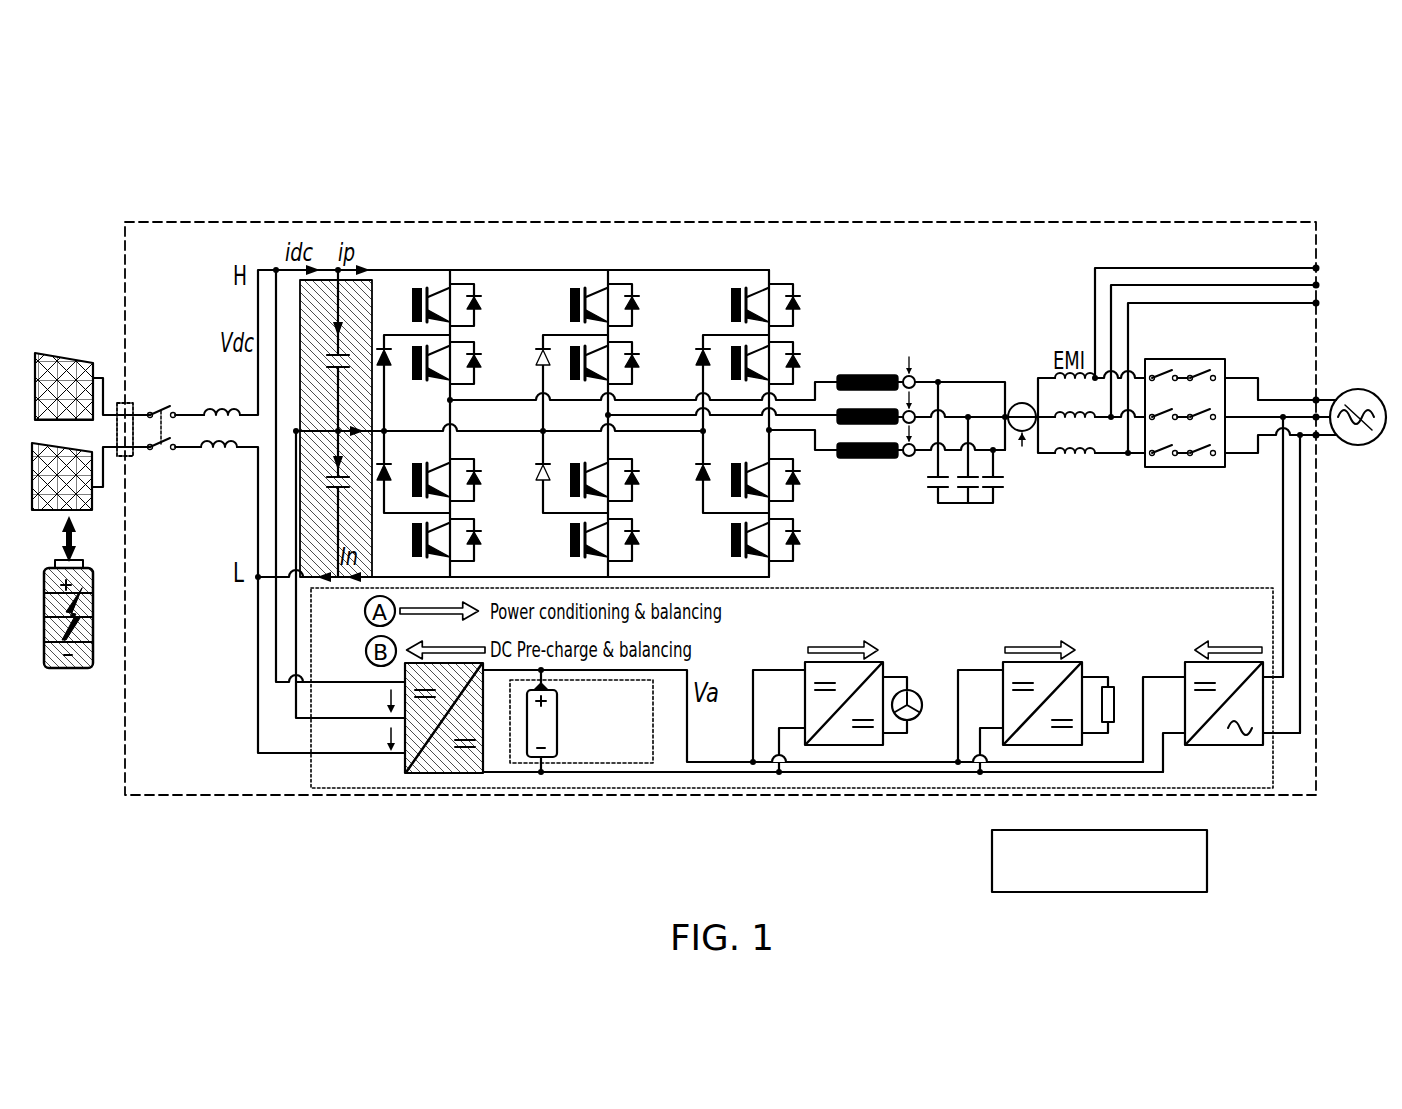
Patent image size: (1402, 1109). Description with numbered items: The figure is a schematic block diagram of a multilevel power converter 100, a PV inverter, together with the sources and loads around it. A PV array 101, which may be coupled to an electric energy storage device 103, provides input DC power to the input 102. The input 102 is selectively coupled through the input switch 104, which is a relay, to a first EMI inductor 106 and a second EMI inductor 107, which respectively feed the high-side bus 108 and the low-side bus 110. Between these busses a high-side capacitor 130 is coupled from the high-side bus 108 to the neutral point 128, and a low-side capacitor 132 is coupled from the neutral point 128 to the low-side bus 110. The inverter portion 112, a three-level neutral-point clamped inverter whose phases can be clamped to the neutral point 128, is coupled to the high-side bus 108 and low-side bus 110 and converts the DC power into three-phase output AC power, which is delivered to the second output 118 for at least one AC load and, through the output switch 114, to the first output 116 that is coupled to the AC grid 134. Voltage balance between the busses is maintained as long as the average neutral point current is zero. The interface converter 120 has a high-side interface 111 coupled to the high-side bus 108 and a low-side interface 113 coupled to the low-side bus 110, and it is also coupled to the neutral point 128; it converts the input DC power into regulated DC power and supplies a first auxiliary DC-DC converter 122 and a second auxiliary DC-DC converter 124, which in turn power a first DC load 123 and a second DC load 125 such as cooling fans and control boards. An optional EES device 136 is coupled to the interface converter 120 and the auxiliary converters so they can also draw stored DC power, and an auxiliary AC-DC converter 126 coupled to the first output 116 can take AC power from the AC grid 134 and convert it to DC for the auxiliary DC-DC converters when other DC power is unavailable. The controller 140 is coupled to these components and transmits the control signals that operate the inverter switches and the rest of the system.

The multilevel power converter 100 is at (215, 175).
The PV array 101 is at (37, 355).
The input 102 is at (128, 403).
The electric energy storage device 103 is at (44, 668).
The input switch 104 is at (160, 450).
The first EMI inductor 106 is at (215, 452).
The second EMI inductor 107 is at (205, 410).
The high-side bus 108 is at (526, 268).
The low-side bus 110 is at (518, 577).
The high-side interface 111 is at (404, 680).
The inverter portion 112 is at (915, 335).
The low-side interface 113 is at (400, 757).
The output switch 114 is at (1215, 368).
The first output 116 is at (1314, 396).
The second output 118 is at (1318, 265).
The interface converter 120 is at (437, 769).
The first auxiliary DC-DC converter 122 is at (805, 668).
The first DC load 123 is at (915, 693).
The second auxiliary DC-DC converter 124 is at (1003, 668).
The second DC load 125 is at (1110, 686).
The auxiliary AC-DC converter 126 is at (1188, 668).
The neutral point 128 is at (298, 428).
The high-side capacitor 130 is at (344, 352).
The low-side capacitor 132 is at (348, 490).
The AC grid 134 is at (1352, 446).
The EES device 136 is at (600, 765).
The controller 140 is at (1208, 862).